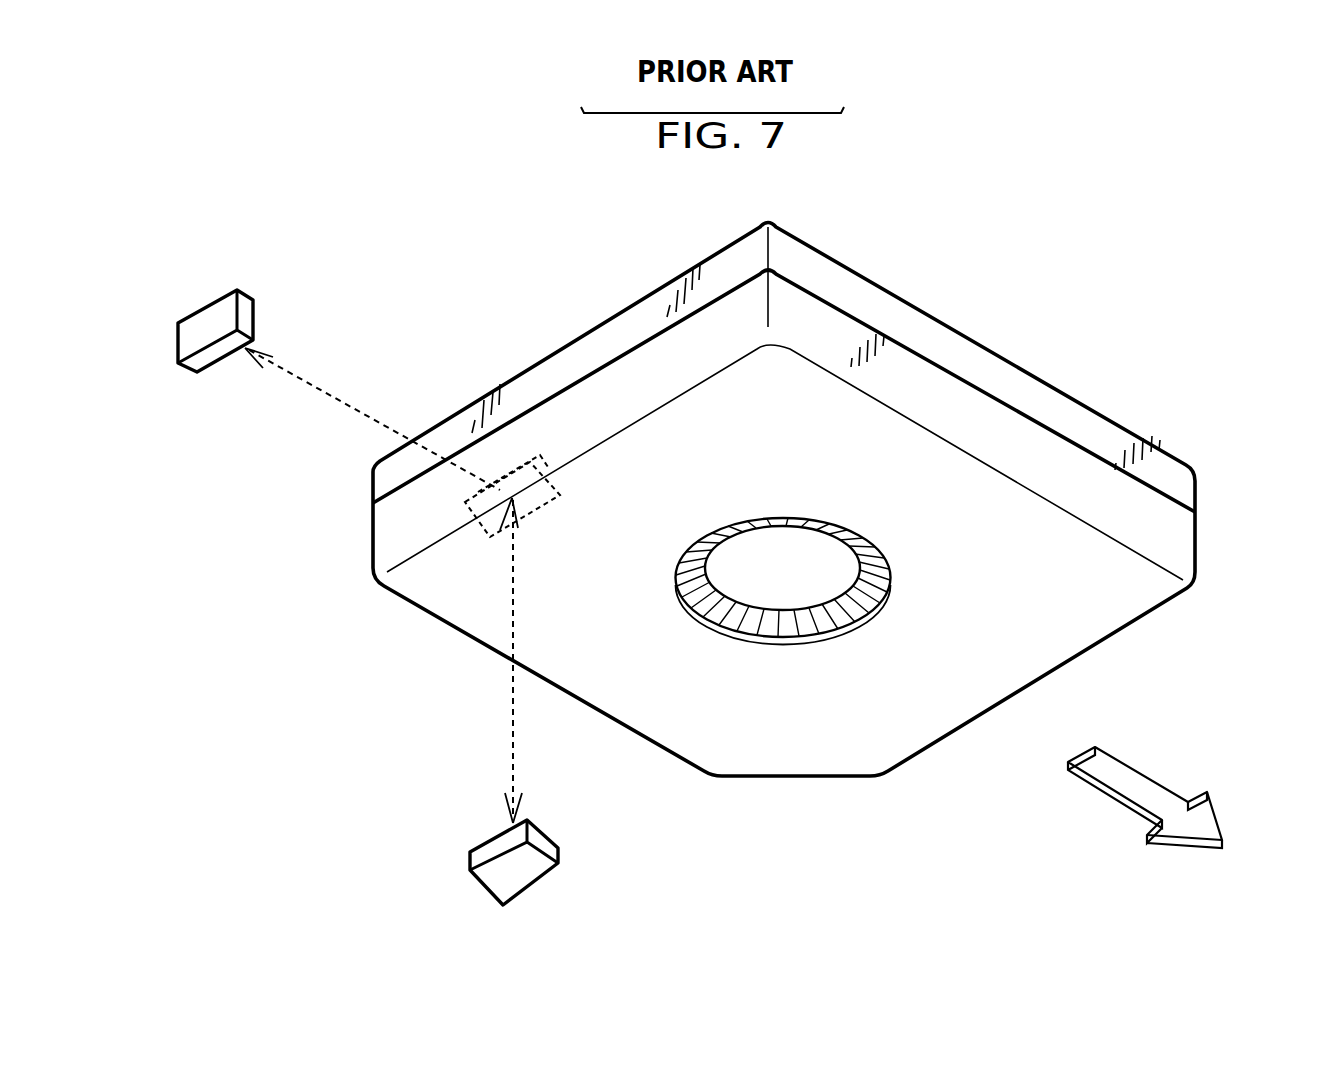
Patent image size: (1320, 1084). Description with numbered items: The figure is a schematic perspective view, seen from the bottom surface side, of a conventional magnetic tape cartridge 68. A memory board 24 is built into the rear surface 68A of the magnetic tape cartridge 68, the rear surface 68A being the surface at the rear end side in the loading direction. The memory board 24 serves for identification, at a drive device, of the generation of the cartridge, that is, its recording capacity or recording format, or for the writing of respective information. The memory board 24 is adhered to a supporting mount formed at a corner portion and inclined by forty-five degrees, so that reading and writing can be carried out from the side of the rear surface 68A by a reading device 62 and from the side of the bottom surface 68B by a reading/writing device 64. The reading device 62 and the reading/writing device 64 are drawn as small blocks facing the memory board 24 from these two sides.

The magnetic tape cartridge 68 is at (978, 338).
The rear surface 68A is at (593, 397).
The bottom surface 68B is at (782, 740).
The memory board 24 is at (545, 480).
The reading device 62 is at (243, 313).
The reading/writing device 64 is at (497, 882).